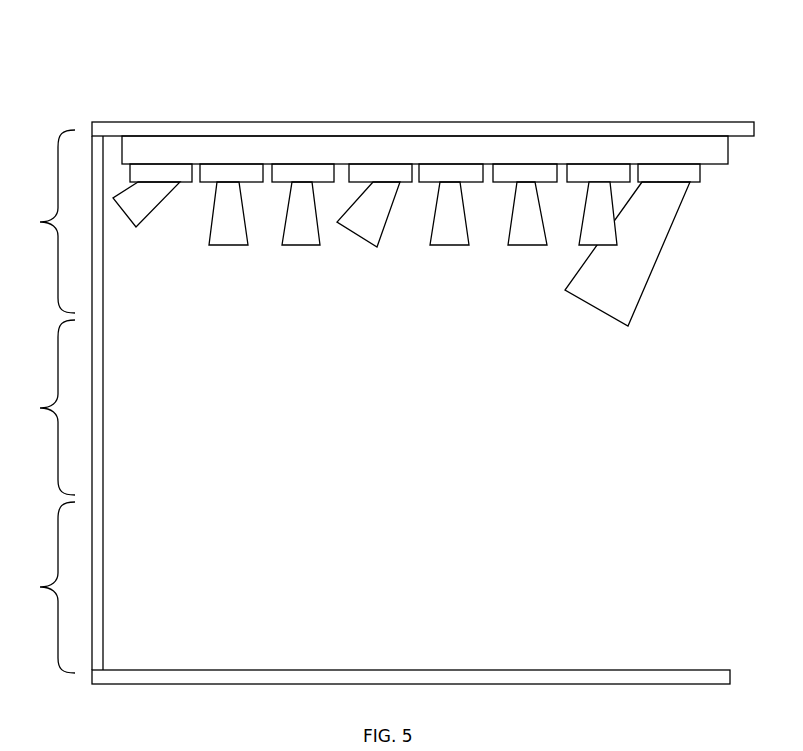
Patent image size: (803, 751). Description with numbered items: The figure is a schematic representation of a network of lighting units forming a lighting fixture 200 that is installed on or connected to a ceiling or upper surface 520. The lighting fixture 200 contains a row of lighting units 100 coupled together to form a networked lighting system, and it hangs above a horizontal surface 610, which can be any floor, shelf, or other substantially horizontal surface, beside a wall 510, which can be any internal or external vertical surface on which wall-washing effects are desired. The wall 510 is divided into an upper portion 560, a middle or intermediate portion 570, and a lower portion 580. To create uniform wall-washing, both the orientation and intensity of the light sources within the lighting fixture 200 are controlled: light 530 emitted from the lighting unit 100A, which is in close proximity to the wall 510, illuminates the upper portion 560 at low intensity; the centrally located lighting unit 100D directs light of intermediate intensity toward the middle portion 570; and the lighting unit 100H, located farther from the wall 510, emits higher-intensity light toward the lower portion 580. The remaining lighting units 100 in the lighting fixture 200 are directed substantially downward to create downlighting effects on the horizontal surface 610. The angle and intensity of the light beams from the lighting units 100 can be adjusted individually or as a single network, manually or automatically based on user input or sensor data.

The lighting units 100 is at (233, 175).
The lighting unit 100A is at (181, 173).
The lighting unit 100D is at (397, 174).
The lighting unit 100H is at (675, 171).
The lighting fixture 200 is at (508, 142).
The wall 510 is at (103, 547).
The ceiling or upper surface 520 is at (225, 122).
The light 530 is at (296, 230).
The upper portion 560 is at (41, 221).
The middle or intermediate portion 570 is at (41, 407).
The lower portion 580 is at (41, 587).
The horizontal surface 610 is at (593, 684).